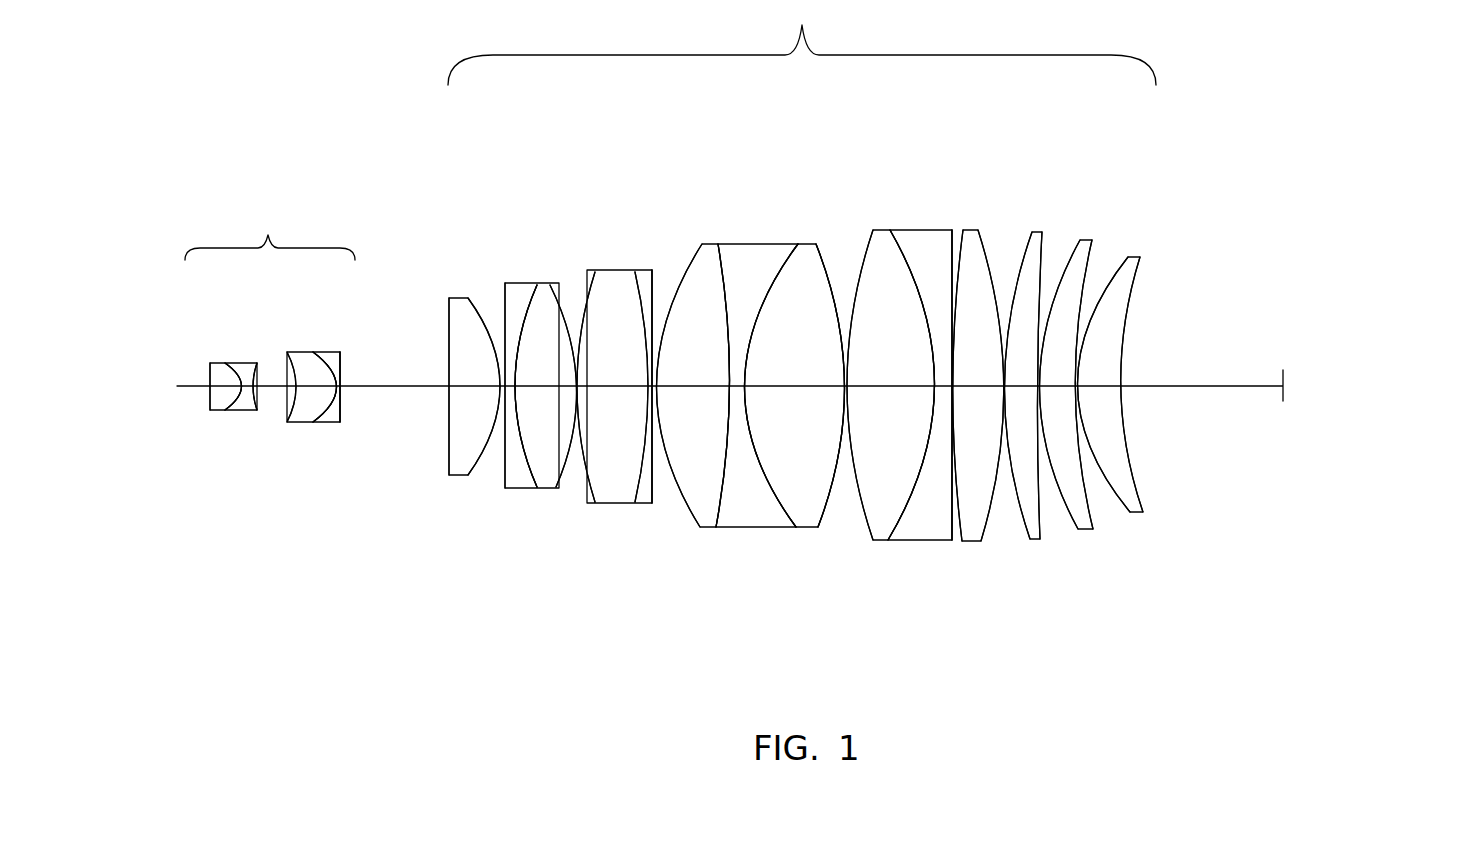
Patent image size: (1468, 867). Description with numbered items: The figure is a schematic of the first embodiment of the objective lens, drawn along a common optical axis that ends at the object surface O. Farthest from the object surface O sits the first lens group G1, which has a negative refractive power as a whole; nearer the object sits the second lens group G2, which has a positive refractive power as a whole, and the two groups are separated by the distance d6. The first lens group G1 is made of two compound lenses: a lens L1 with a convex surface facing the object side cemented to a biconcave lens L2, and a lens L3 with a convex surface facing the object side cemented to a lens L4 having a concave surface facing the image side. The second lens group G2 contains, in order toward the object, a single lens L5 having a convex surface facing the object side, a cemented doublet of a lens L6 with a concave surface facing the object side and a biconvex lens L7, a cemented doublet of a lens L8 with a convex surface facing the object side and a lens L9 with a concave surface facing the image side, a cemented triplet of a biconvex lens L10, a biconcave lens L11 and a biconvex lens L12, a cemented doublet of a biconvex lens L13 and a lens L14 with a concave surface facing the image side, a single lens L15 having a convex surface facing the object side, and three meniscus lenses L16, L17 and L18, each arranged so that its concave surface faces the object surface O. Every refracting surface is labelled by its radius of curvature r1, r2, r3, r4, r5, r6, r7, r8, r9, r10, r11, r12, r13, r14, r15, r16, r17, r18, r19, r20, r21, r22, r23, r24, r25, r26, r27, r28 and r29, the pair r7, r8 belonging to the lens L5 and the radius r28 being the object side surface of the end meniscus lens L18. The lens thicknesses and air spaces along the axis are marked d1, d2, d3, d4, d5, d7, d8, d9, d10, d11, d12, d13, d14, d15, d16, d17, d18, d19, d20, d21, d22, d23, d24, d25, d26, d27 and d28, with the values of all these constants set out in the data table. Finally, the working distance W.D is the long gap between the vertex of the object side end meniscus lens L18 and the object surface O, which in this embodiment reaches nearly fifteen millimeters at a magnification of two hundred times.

The first lens group G1 is at (266, 349).
The second lens group G2 is at (815, 323).
The lens L1 is at (220, 365).
The biconcave lens L2 is at (248, 365).
The lens L3 is at (300, 355).
The lens L4 is at (330, 355).
The single lens L5 is at (457, 300).
The lens L6 is at (518, 285).
The biconvex lens L7 is at (548, 285).
The lens L8 is at (600, 275).
The lens L9 is at (640, 275).
The biconvex lens L10 is at (705, 247).
The biconcave lens L11 is at (740, 247).
The biconvex lens L12 is at (800, 247).
The biconvex lens L13 is at (880, 233).
The lens L14 is at (920, 233).
The single lens L15 is at (970, 233).
The meniscus lens L16 is at (1036, 236).
The meniscus lens L17 is at (1086, 243).
The meniscus lens L18 is at (1135, 260).
The radius of curvature r1 is at (208, 398).
The radius of curvature r2 is at (236, 401).
The radius of curvature r3 is at (255, 405).
The radius of curvature r4 is at (287, 413).
The radius of curvature r5 is at (318, 421).
The radius of curvature r6 is at (340, 421).
The radius of curvature r7 is at (448, 452).
The radius of curvature r8 is at (483, 455).
The radius of curvature r9 is at (505, 480).
The radius of curvature r10 is at (530, 480).
The radius of curvature r11 is at (557, 480).
The radius of curvature r12 is at (588, 500).
The radius of curvature r13 is at (598, 503).
The radius of curvature r14 is at (642, 503).
The radius of curvature r15 is at (700, 529).
The radius of curvature r16 is at (718, 529).
The radius of curvature r17 is at (790, 529).
The radius of curvature r18 is at (815, 529).
The radius of curvature r19 is at (872, 541).
The radius of curvature r20 is at (893, 541).
The radius of curvature r21 is at (950, 541).
The radius of curvature r22 is at (963, 542).
The radius of curvature r23 is at (986, 541).
The radius of curvature r24 is at (1032, 540).
The radius of curvature r25 is at (1040, 540).
The radius of curvature r26 is at (1080, 530).
The radius of curvature r27 is at (1092, 530).
The radius of curvature r28 is at (1132, 513).
The radius of curvature r29 is at (1143, 512).
The lens thickness d1 is at (220, 380).
The lens thickness d2 is at (240, 378).
The distance between lenses d3 is at (276, 382).
The lens thickness d4 is at (315, 389).
The lens thickness d5 is at (338, 382).
The distance between lens groups d6 is at (425, 381).
The lens thickness d7 is at (490, 386).
The distance between lenses d8 is at (500, 372).
The lens thickness d9 is at (516, 390).
The lens thickness d10 is at (560, 384).
The distance between lenses d11 is at (575, 376).
The lens thickness d12 is at (630, 375).
The lens thickness d13 is at (645, 400).
The distance between lenses d14 is at (656, 392).
The lens thickness d15 is at (716, 380).
The lens thickness d16 is at (738, 390).
The lens thickness d17 is at (805, 381).
The distance between lenses d18 is at (843, 368).
The lens thickness d19 is at (906, 382).
The lens thickness d20 is at (933, 380).
The distance between lenses d21 is at (950, 388).
The lens thickness d22 is at (977, 382).
The distance between lenses d23 is at (1005, 390).
The lens thickness d24 is at (1018, 384).
The distance between lenses d25 is at (1039, 388).
The lens thickness d26 is at (1053, 383).
The distance between lenses d27 is at (1080, 390).
The lens thickness d28 is at (1116, 382).
The working distance W.D is at (1191, 368).
The object surface O is at (1372, 402).